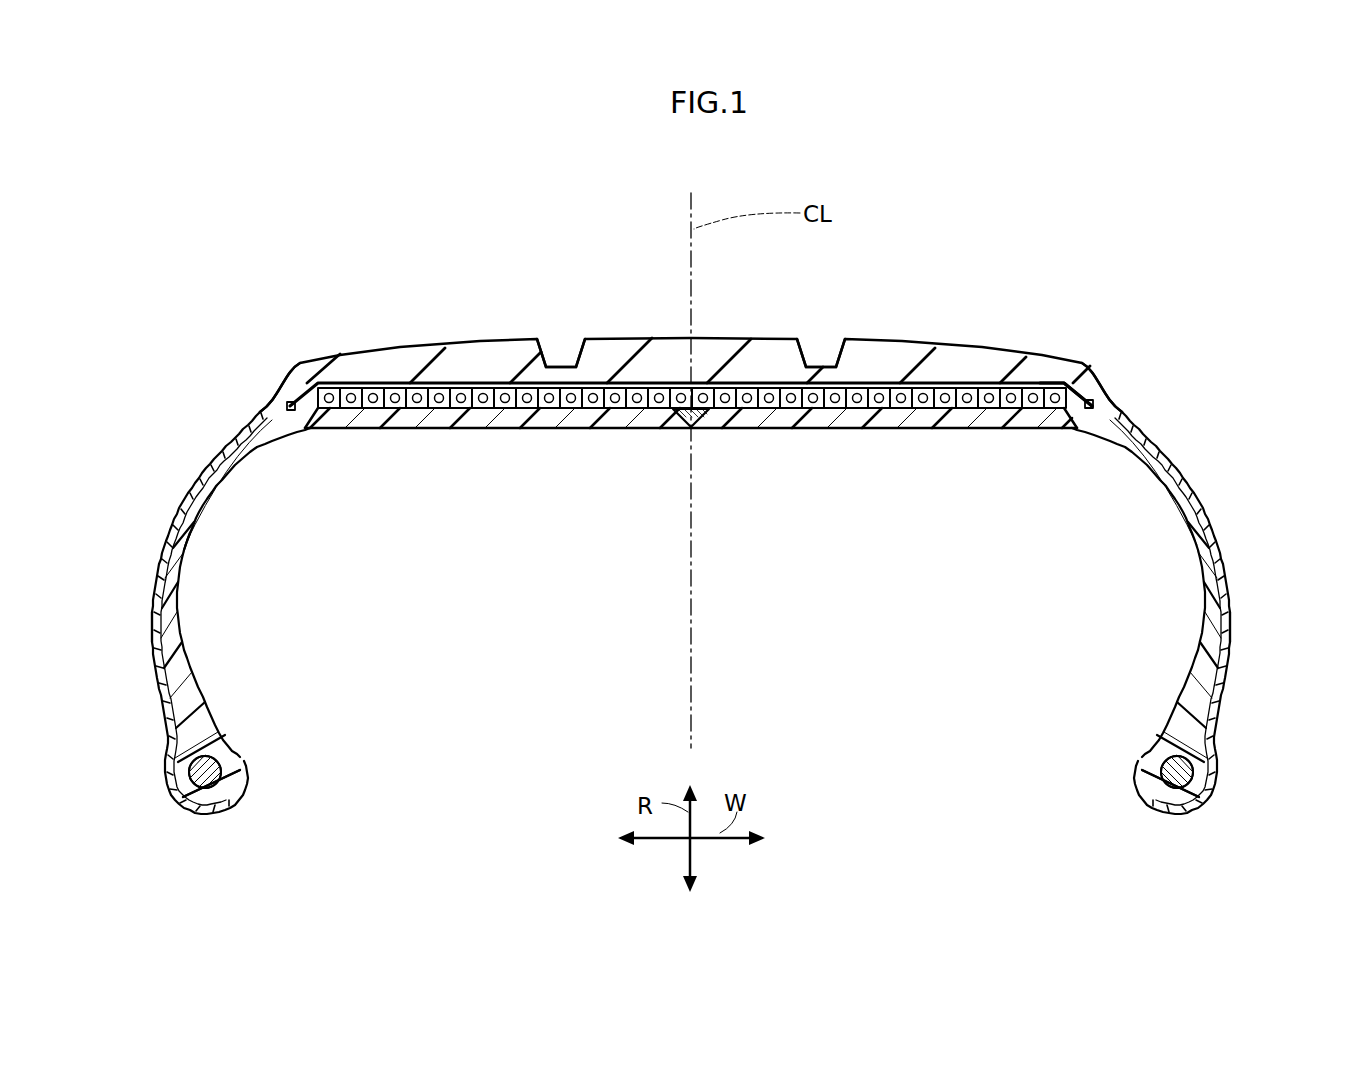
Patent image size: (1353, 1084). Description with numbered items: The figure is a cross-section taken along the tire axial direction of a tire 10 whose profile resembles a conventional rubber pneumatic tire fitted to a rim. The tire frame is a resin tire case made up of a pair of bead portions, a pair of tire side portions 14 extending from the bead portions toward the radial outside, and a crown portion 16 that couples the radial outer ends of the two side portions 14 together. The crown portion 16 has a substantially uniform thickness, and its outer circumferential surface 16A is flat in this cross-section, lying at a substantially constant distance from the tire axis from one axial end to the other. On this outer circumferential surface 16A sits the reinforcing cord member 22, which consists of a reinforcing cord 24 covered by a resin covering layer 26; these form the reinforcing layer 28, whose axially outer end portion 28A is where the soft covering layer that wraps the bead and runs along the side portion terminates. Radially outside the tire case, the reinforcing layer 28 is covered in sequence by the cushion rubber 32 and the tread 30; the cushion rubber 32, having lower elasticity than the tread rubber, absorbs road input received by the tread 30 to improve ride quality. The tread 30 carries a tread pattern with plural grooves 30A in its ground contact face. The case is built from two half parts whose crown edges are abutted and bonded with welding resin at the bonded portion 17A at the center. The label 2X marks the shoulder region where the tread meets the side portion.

The tire 10 is at (197, 256).
The tire side portion 14 is at (180, 594).
The crown portion 16 is at (727, 428).
The outer circumferential surface 16A is at (750, 396).
The bonded portion 17A is at (675, 425).
The reinforcing cord member 22 is at (1070, 373).
The reinforcing cord 24 is at (1039, 409).
The resin covering layer 26 is at (1058, 384).
The reinforcing layer 28 is at (947, 384).
The end portion 28A is at (316, 410).
The tread 30 is at (876, 338).
The groove 30A is at (575, 347).
The cushion rubber 32 is at (1094, 377).
The shoulder width 2X is at (300, 362).